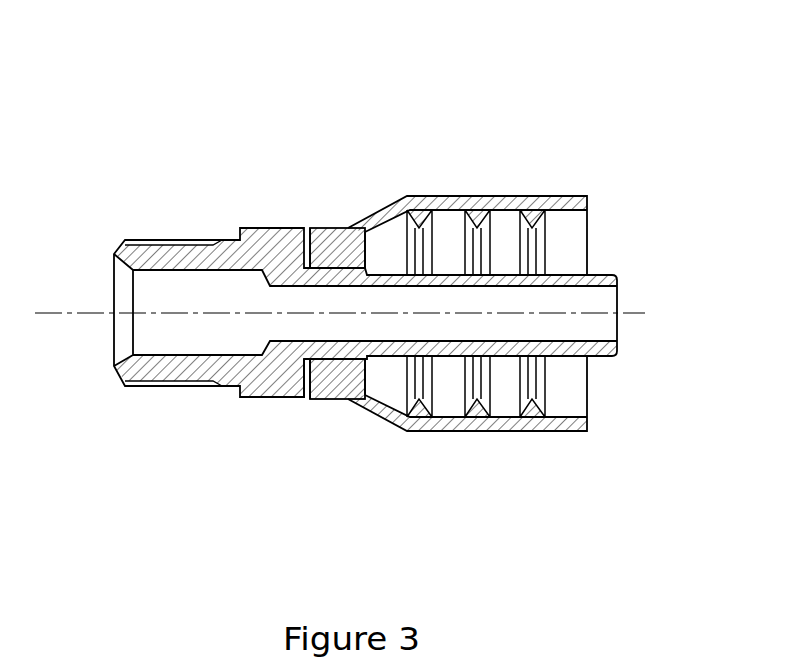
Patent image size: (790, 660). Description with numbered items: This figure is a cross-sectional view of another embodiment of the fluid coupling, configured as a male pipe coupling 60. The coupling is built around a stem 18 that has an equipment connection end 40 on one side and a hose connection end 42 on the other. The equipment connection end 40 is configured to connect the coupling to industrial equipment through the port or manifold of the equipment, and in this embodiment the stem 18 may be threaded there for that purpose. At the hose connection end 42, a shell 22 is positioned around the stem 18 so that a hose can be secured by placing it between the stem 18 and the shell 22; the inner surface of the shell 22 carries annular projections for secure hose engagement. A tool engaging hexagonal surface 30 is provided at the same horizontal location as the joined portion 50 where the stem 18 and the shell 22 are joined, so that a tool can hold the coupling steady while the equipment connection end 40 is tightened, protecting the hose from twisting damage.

The male pipe coupling 60 is at (614, 58).
The equipment connection end 40 is at (147, 143).
The hose connection end 42 is at (569, 145).
The shell 22 is at (455, 197).
The tool engaging hexagonal surface 30 is at (350, 228).
The stem 18 is at (310, 228).
The joined portion 50 is at (318, 352).